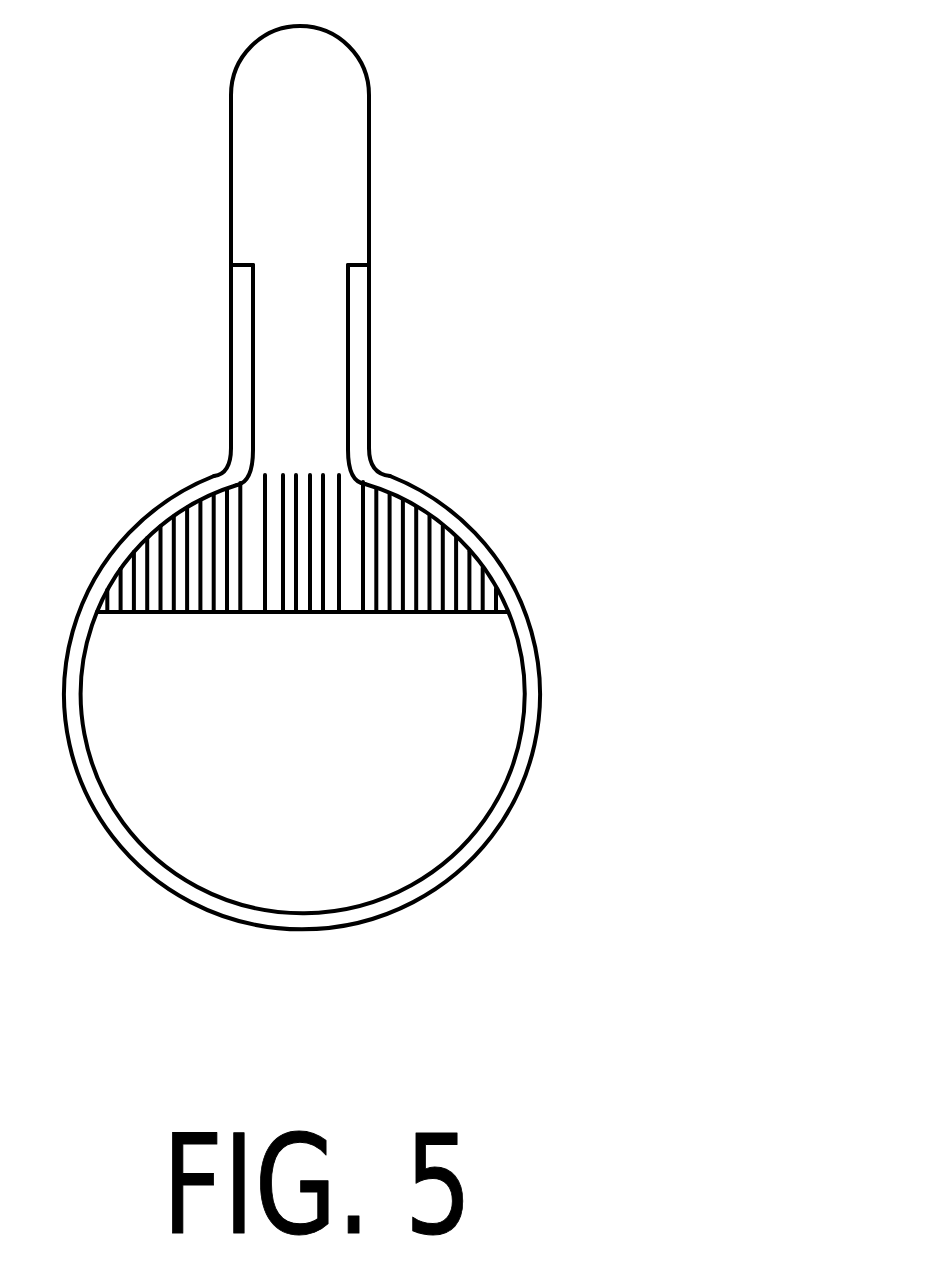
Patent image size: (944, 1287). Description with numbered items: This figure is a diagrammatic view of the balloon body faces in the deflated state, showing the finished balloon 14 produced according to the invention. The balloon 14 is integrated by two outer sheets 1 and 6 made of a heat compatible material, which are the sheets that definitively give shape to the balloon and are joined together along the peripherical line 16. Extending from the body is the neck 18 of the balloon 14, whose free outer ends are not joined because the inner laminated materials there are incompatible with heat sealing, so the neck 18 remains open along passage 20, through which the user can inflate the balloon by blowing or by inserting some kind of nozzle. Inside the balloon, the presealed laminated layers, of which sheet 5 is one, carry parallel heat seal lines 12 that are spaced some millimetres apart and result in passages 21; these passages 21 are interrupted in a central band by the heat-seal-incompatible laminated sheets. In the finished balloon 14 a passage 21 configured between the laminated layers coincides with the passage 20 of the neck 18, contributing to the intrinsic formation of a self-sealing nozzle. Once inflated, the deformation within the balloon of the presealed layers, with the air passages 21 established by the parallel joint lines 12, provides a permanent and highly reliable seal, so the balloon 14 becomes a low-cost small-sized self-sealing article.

The outer sheet 1 is at (385, 695).
The sheet 5 is at (363, 645).
The outer sheet 6 is at (385, 702).
The parallel heat seal lines 12 is at (498, 496).
The balloon 14 is at (356, 255).
The peripherical line 16 is at (386, 687).
The neck 18 is at (222, 251).
The passage 20 is at (369, 318).
The passages 21 is at (316, 473).